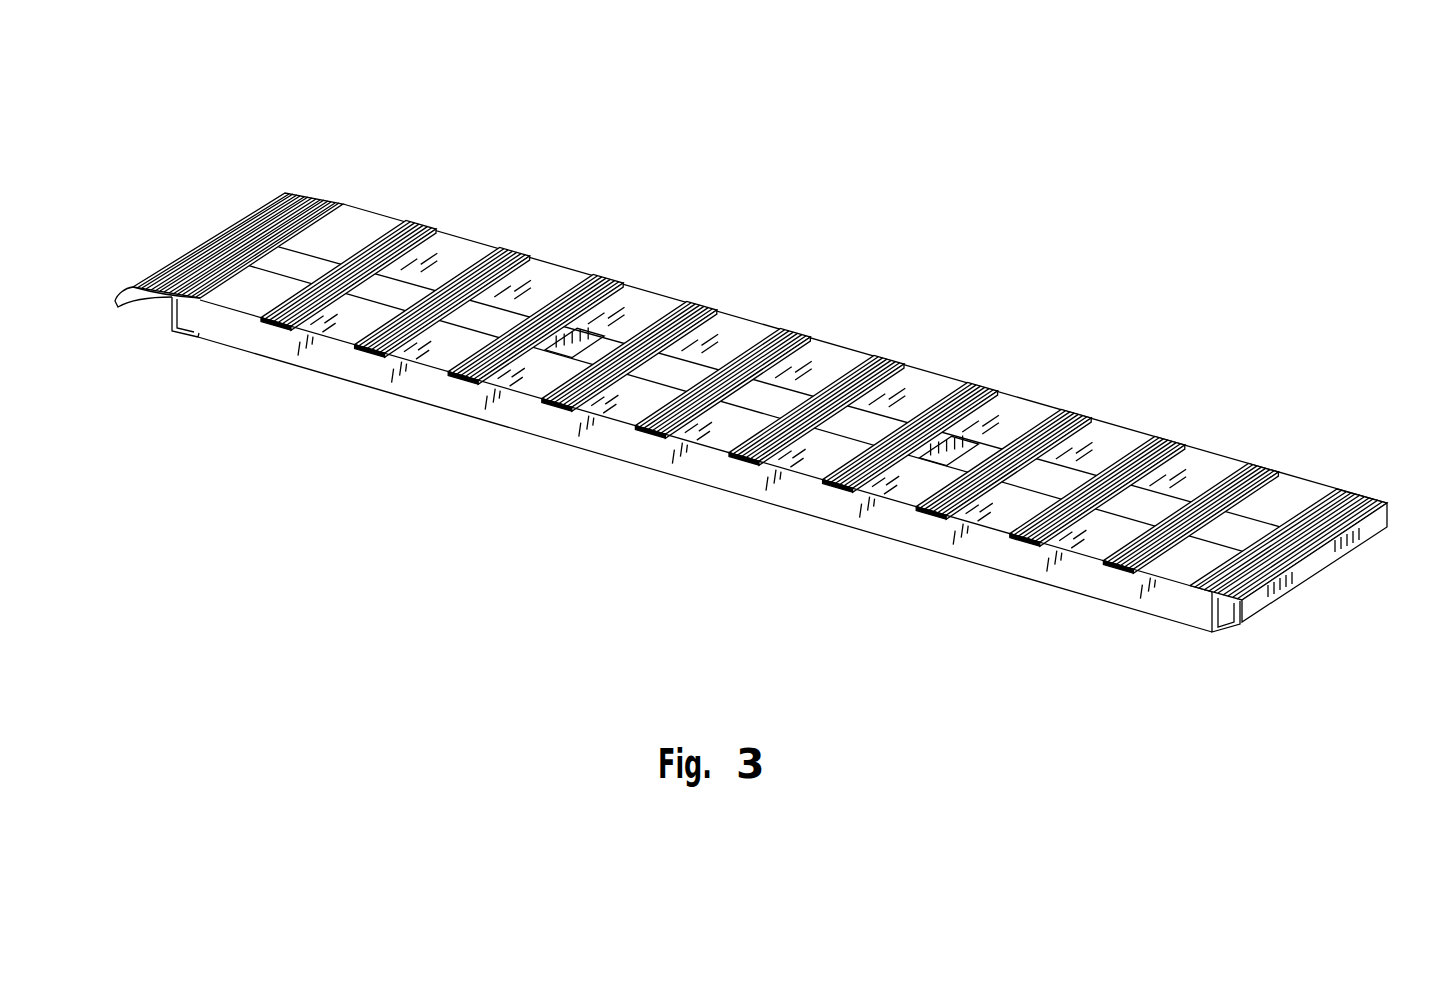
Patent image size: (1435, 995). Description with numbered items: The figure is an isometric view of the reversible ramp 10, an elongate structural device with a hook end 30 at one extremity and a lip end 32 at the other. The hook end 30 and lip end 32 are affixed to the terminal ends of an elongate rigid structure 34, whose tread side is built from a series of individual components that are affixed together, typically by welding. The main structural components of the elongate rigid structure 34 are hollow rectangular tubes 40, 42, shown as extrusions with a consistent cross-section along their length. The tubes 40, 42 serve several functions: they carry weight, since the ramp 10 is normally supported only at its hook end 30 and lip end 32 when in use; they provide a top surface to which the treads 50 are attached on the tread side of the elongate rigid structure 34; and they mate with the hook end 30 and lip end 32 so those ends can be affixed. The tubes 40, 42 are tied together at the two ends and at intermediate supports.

The reversible ramp 10 is at (894, 152).
The hook end 30 is at (1365, 484).
The lip end 32 is at (186, 238).
The elongate rigid structure 34 is at (609, 460).
The hollow rectangular tube 40 is at (1100, 446).
The hollow rectangular tube 42 is at (970, 540).
The tread 50 is at (573, 292).